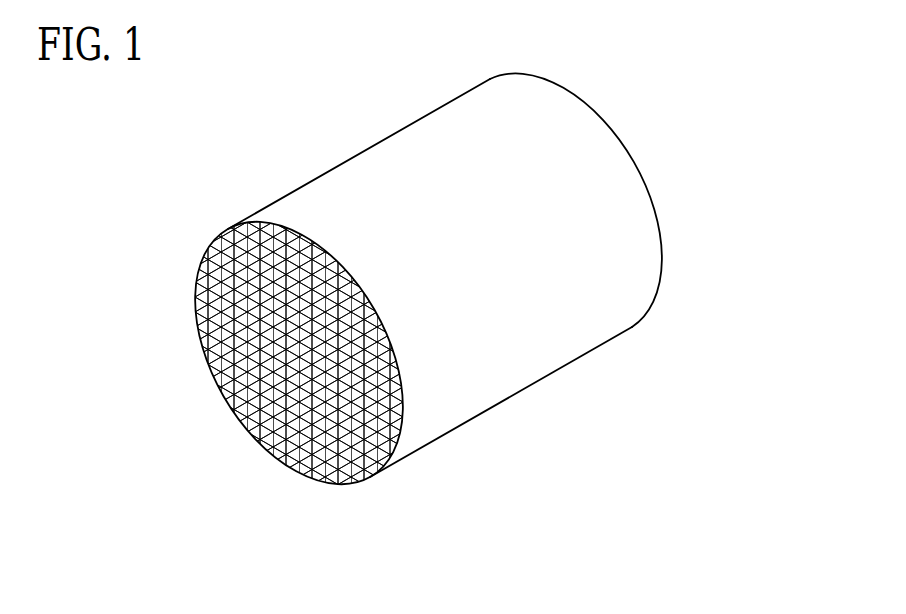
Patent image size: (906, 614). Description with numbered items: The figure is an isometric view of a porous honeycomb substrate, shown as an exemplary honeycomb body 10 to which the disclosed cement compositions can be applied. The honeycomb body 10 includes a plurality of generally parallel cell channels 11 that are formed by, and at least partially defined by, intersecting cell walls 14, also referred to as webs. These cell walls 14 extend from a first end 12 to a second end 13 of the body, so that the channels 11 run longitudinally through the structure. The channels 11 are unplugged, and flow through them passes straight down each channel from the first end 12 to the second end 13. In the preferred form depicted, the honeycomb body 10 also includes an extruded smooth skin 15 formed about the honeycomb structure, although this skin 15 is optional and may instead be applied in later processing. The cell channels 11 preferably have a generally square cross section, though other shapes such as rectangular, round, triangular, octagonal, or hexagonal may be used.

The honeycomb body 10 is at (448, 276).
The cell channels 11 is at (240, 281).
The first end 12 is at (205, 248).
The second end 13 is at (606, 118).
The cell walls 14 is at (240, 313).
The extruded smooth skin 15 is at (405, 147).